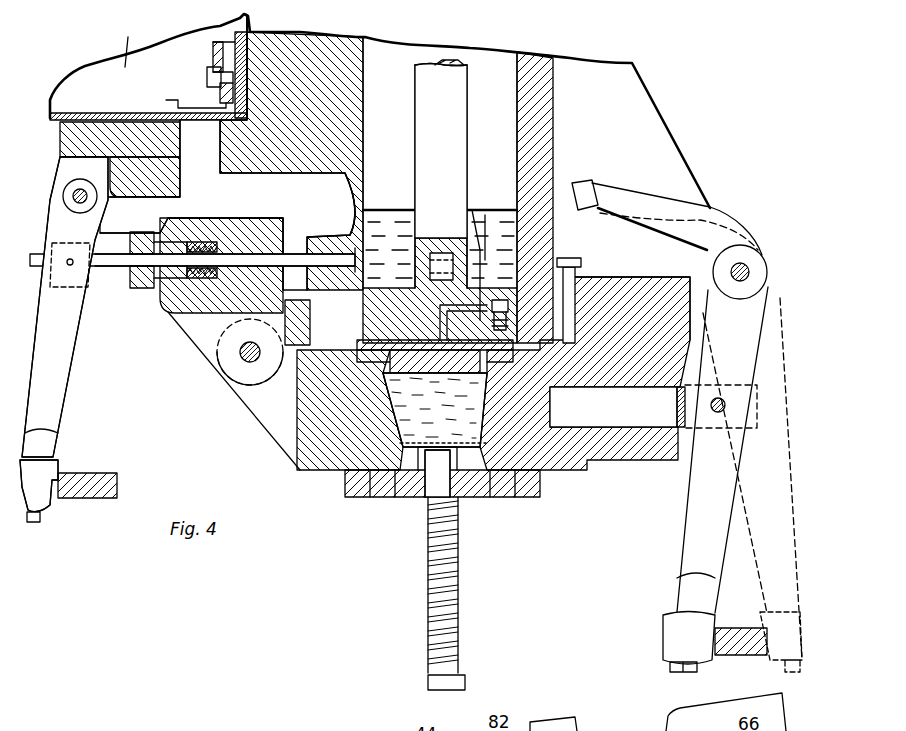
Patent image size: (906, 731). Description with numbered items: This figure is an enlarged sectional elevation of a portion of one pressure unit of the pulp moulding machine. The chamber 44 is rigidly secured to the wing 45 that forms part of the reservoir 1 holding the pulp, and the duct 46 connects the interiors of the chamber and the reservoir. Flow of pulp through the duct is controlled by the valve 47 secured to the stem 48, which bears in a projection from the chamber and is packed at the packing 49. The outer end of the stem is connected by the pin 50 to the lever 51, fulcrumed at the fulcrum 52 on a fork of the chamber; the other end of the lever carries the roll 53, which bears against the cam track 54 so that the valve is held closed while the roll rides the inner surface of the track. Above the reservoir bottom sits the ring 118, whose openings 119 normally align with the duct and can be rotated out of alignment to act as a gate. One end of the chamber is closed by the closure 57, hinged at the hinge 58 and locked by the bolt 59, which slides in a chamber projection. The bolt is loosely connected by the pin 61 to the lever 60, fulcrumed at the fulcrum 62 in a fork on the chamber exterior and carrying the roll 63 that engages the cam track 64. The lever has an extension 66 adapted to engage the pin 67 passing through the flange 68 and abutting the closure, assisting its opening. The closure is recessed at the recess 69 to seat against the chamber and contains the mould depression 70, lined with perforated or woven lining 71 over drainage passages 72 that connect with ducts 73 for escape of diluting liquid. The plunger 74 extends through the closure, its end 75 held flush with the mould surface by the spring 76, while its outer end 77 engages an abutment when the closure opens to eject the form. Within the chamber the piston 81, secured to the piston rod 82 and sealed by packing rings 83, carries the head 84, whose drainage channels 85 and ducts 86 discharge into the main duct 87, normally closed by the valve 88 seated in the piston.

The reservoir 1 is at (120, 48).
The chamber 44 is at (506, 137).
The wing 45 is at (290, 45).
The duct 46 is at (227, 205).
The valve 47 is at (352, 238).
The stem 48 is at (125, 268).
The packing 49 is at (197, 290).
The pin 50 is at (65, 257).
The lever 51 is at (68, 350).
The fulcrum 52 is at (73, 196).
The roll 53 is at (50, 500).
The cam track 54 is at (105, 481).
The closure 57 is at (400, 413).
The hinge 58 is at (245, 358).
The bolt 59 is at (630, 415).
The lever 60 is at (697, 500).
The pin 61 is at (713, 417).
The fulcrum 62 is at (752, 268).
The roll 63 is at (680, 645).
The cam track 64 is at (737, 655).
The extension 66 is at (662, 210).
The pin 67 is at (571, 262).
The flange 68 is at (565, 345).
The recess 69 is at (578, 300).
The depression 70 is at (397, 440).
The lining 71 is at (350, 492).
The drainage passages 72 is at (550, 470).
The ducts 73 is at (513, 493).
The plunger 74 is at (440, 493).
The plunger end 75 is at (420, 487).
The spring 76 is at (460, 625).
The outer end of plunger 77 is at (458, 682).
The piston 81 is at (385, 250).
The piston rod 82 is at (450, 125).
The packing rings 83 is at (375, 297).
The head 84 is at (347, 287).
The drainage channels 85 is at (488, 238).
The ducts 86 is at (480, 240).
The main duct 87 is at (444, 253).
The valve 88 is at (500, 300).
The ring 118 is at (166, 103).
The openings 119 is at (213, 52).